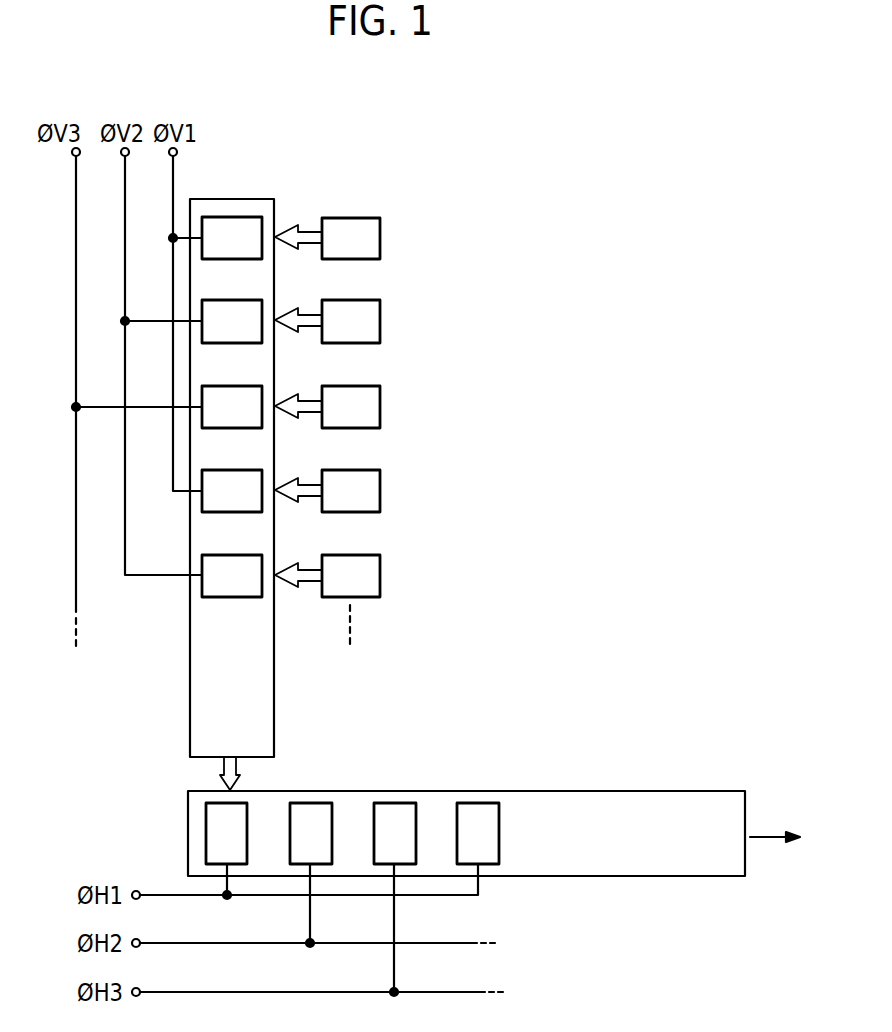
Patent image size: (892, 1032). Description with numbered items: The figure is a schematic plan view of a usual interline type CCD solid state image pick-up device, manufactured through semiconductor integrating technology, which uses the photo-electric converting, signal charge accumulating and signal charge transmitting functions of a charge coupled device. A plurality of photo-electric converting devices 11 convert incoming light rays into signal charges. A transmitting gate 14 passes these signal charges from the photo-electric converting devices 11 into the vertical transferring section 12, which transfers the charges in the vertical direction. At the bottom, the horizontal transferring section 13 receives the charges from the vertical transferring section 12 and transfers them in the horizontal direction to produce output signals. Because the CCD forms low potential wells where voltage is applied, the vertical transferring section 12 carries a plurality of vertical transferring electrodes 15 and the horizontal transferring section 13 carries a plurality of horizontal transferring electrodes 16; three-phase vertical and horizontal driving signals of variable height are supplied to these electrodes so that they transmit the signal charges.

The photo-electric converting device 11 is at (357, 227).
The vertical transferring section 12 is at (247, 206).
The horizontal transferring section 13 is at (526, 802).
The transmitting gate 14 is at (287, 229).
The vertical transferring electrode 15 is at (207, 584).
The horizontal transferring electrode 16 is at (393, 808).